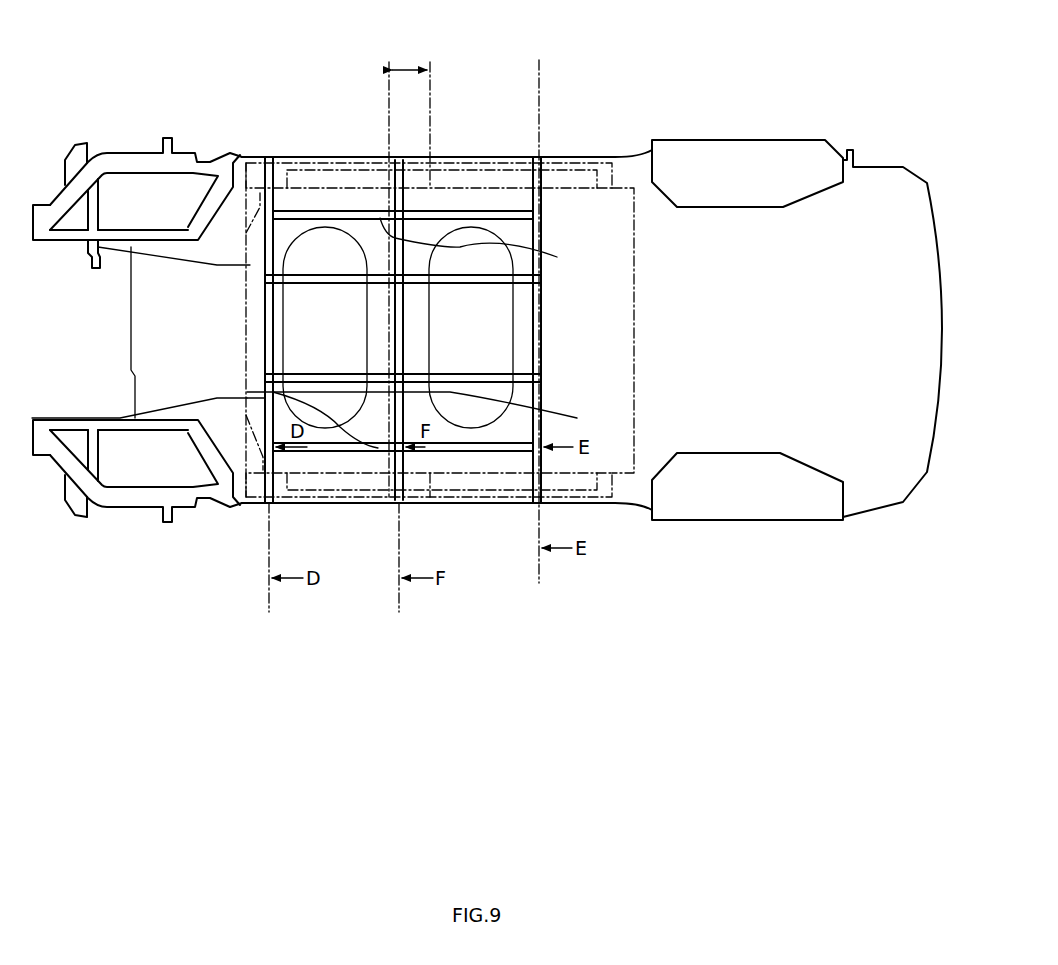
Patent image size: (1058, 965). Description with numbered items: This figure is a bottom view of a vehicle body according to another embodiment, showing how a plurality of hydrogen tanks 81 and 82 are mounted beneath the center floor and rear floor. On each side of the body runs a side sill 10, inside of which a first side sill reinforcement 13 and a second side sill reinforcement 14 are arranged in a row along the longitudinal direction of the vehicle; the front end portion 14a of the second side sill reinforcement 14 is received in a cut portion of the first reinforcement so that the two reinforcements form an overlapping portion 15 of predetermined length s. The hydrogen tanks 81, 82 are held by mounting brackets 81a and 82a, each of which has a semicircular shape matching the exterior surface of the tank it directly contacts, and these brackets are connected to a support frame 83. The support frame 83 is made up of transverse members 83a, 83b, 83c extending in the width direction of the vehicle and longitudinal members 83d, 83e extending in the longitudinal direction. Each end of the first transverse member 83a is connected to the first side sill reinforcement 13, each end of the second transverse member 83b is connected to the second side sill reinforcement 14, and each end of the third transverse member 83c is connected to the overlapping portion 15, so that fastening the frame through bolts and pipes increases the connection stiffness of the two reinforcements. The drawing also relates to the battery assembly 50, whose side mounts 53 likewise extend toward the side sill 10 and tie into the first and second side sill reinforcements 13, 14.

The side sill 10 is at (372, 60).
The first side sill reinforcement 13 is at (343, 160).
The second side sill reinforcement 14 is at (509, 160).
The front end portion of the second side sill reinforcement 14a is at (414, 503).
The overlapping portion 15 is at (415, 162).
The battery assembly 50 is at (246, 352).
The side mount 53 is at (300, 160).
The hydrogen tank 81 is at (292, 304).
The mounting bracket 81a is at (322, 284).
The hydrogen tank 82 is at (505, 347).
The mounting bracket 82a is at (450, 284).
The support frame 83 is at (258, 271).
The first transverse member 83a is at (263, 412).
The second transverse member 83b is at (541, 398).
The third transverse member 83c is at (432, 410).
The longitudinal member 83d is at (489, 246).
The longitudinal member 83e is at (247, 392).